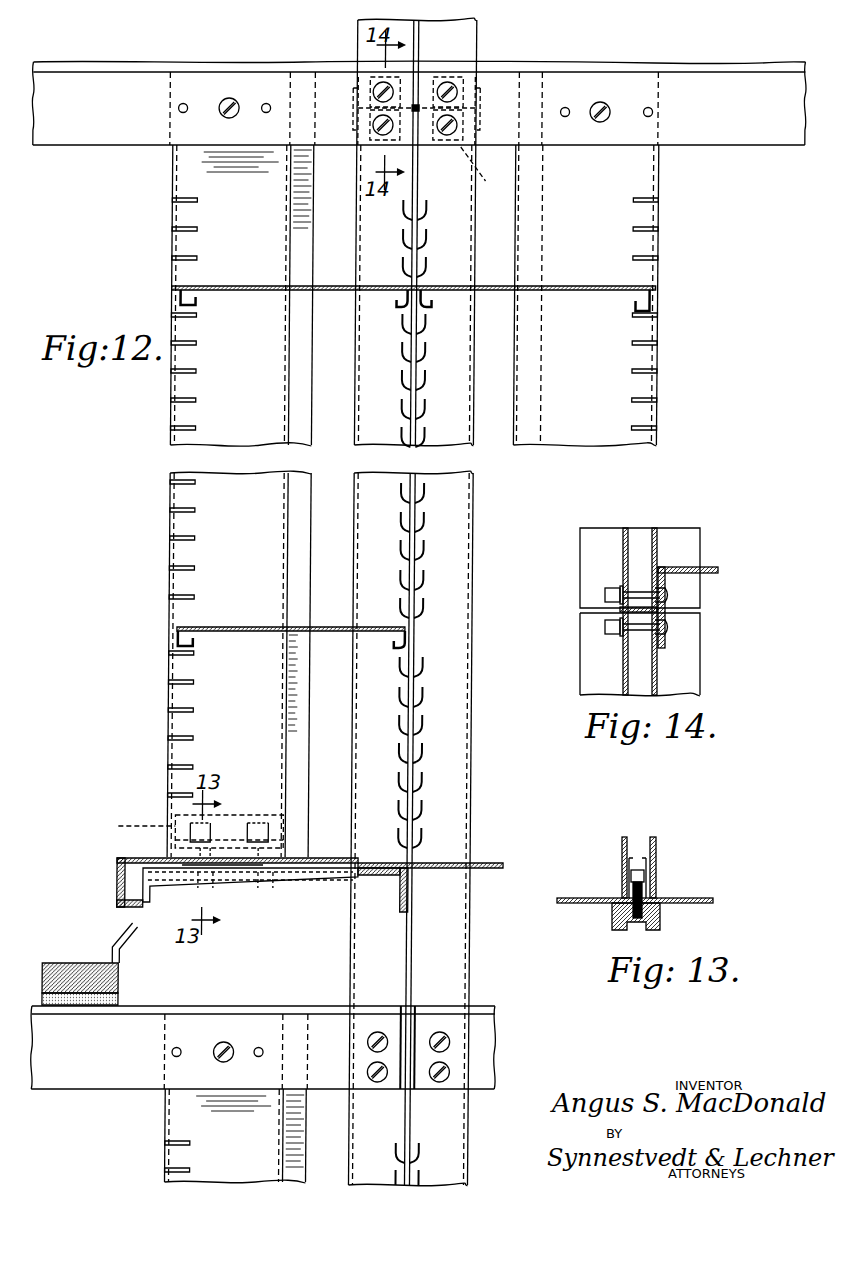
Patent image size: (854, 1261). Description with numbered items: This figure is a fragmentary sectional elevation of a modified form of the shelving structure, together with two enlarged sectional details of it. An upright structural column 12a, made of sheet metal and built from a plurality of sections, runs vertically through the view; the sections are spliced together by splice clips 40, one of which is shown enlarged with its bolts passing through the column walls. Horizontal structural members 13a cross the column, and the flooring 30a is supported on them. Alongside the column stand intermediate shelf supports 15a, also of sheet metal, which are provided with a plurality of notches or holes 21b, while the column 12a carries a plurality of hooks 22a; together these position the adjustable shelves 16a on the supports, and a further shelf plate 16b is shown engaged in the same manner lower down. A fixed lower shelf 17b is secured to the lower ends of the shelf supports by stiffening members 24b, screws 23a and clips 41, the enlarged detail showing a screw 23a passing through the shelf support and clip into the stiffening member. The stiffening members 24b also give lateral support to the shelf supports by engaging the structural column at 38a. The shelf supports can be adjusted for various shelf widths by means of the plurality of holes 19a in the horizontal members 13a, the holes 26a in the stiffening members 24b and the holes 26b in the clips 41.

In FIG. 12, the upright structural column 12a is at (444, 267).
In FIG. 14, the upright structural column 12a is at (690, 620).
In FIG. 12, the horizontal structural member 13a is at (88, 133).
In FIG. 14, the horizontal structural member 13a is at (712, 565).
In FIG. 12, the intermediate shelf support 15a is at (183, 243).
In FIG. 13, the intermediate shelf support 15a is at (657, 850).
In FIG. 12, the adjustable shelf 16a is at (247, 285).
In FIG. 12, the horizontal tie plate 16b is at (256, 626).
In FIG. 12, the fixed lower shelf 17b is at (324, 858).
In FIG. 13, the fixed lower shelf 17b is at (568, 897).
In FIG. 12, the holes 19a is at (179, 113).
In FIG. 12, the notches or holes 21b is at (195, 278).
In FIG. 12, the hooks 22a is at (402, 287).
In FIG. 12, the screws 23a is at (225, 886).
In FIG. 13, the screws 23a is at (637, 880).
In FIG. 12, the stiffening member 24b is at (317, 872).
In FIG. 13, the stiffening member 24b is at (665, 916).
In FIG. 12, the holes 26a is at (312, 890).
In FIG. 12, the holes 26b is at (243, 836).
In FIG. 12, the flooring 30a is at (65, 967).
In FIG. 12, the engagement point 38a is at (363, 877).
In FIG. 12, the splice clip 40 is at (428, 579).
In FIG. 14, the splice clip 40 is at (615, 608).
In FIG. 12, the clip 41 is at (189, 831).
In FIG. 13, the clip 41 is at (657, 892).